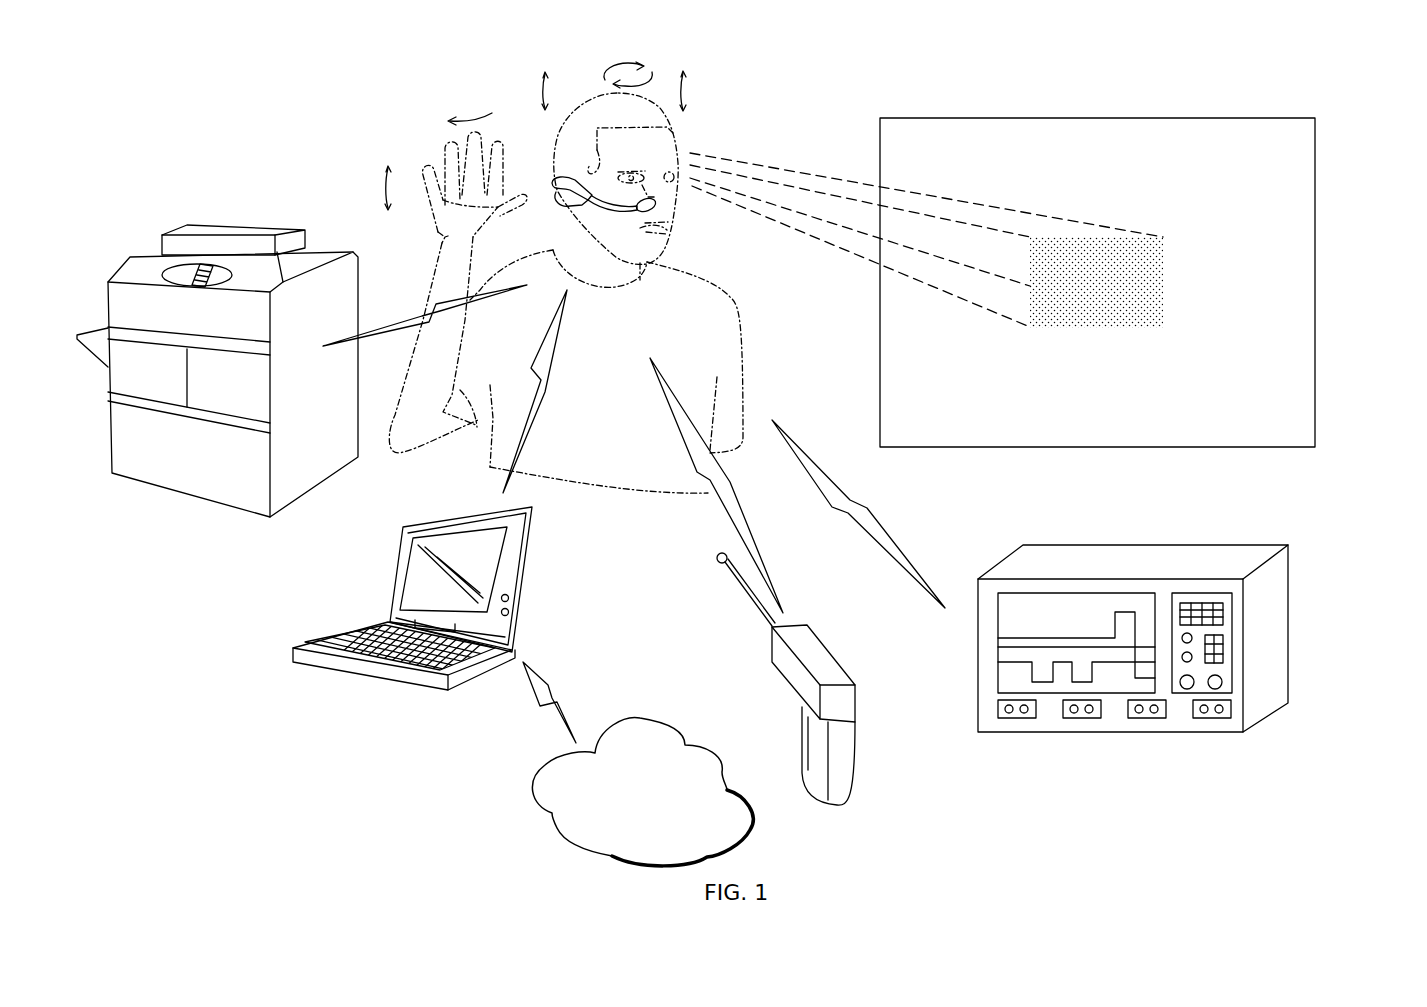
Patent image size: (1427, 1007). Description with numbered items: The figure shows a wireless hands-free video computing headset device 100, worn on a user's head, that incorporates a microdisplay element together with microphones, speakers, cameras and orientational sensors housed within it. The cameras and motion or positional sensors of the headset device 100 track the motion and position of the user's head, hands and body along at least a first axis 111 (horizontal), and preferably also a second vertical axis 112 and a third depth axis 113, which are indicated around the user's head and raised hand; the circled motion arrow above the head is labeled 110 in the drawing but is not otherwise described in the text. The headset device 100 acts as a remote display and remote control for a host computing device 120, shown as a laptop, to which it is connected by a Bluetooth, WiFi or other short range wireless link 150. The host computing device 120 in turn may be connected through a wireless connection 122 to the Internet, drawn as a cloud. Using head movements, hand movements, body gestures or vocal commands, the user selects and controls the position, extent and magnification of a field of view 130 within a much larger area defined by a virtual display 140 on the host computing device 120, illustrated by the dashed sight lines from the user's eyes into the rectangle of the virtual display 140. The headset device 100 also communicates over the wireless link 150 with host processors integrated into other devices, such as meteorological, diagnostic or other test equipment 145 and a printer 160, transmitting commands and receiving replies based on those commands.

The wireless computing headset device 100 is at (574, 205).
The head rotation (yaw) motion 110 is at (610, 77).
The first axis (horizontal) 111 is at (684, 93).
The second axis (vertical) 112 is at (541, 92).
The third axis (depth) 113 is at (388, 188).
The host computing device 120 is at (528, 566).
The wireless connection 122 is at (648, 718).
The field of view 130 is at (1165, 284).
The virtual display 140 is at (978, 447).
The test equipment 145 is at (1290, 606).
The wireless link 150 is at (527, 418).
The printer 160 is at (222, 228).